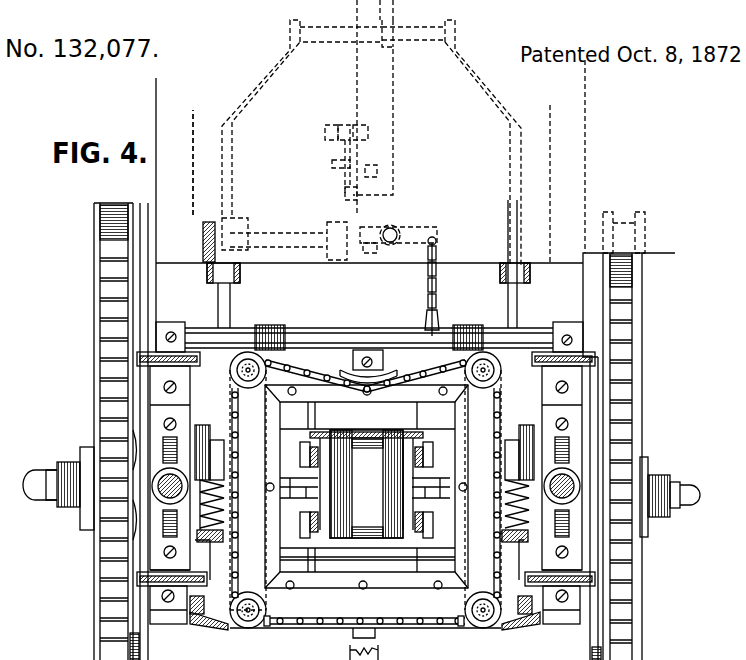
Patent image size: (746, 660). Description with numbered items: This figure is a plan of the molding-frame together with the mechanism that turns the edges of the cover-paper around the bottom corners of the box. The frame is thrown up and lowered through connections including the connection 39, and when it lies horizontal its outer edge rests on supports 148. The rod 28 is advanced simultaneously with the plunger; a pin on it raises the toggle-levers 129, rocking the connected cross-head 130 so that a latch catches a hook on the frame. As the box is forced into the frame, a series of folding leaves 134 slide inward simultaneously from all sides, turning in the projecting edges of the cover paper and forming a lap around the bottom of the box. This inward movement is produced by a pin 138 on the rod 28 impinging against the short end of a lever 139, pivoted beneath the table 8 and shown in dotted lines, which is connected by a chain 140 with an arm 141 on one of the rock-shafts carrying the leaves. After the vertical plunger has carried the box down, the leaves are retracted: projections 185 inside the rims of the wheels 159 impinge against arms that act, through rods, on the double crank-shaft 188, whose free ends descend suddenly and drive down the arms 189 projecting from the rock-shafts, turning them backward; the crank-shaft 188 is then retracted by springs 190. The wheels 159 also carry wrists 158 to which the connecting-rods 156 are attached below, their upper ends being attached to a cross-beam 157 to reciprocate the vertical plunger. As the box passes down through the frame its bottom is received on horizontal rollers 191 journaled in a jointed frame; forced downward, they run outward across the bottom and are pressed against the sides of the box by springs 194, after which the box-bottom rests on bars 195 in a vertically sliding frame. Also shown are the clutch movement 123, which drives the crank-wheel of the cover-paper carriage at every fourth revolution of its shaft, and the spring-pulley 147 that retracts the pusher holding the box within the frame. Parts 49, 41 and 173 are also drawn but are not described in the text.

The table 8 is at (200, 154).
The connection 39 is at (355, 139).
The rod 28 is at (369, 99).
The clutch movement 123 is at (327, 156).
The pin 138 is at (379, 158).
The toggle-levers 129 is at (345, 209).
The lever 139 is at (385, 218).
The cross-head 130 is at (207, 236).
The chain 140 is at (441, 283).
The arm 141 is at (442, 323).
The bearing 49 is at (368, 264).
The shaft 41 is at (369, 346).
The double crank-shaft 188 is at (366, 365).
The spring-pulley 147 is at (369, 468).
The wheels 159 is at (107, 431).
The cross-beam 157 is at (616, 456).
The arms 189 is at (366, 558).
The springs 190 is at (356, 605).
The supports 148 is at (365, 622).
The projections 185 is at (365, 646).
The springs 194 is at (226, 513).
The bars 195 is at (535, 515).
The connecting-rods 156 is at (361, 492).
The wrists 158 is at (97, 485).
The horizontal rollers 191 is at (366, 484).
The plate 173 is at (342, 493).
The folding leaves 134 is at (365, 490).